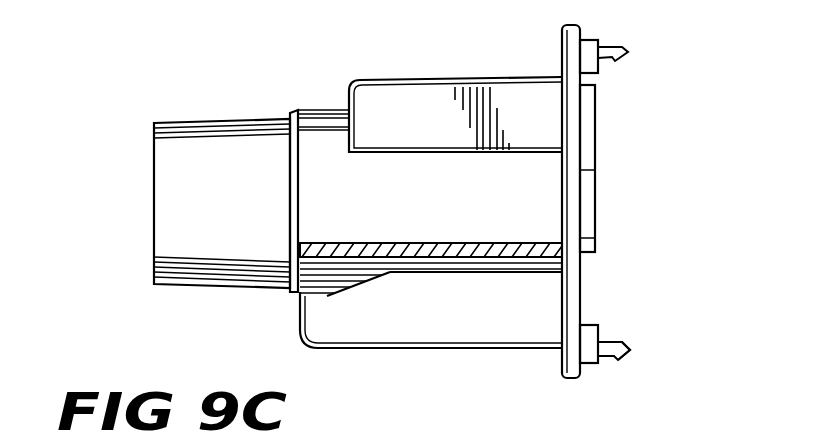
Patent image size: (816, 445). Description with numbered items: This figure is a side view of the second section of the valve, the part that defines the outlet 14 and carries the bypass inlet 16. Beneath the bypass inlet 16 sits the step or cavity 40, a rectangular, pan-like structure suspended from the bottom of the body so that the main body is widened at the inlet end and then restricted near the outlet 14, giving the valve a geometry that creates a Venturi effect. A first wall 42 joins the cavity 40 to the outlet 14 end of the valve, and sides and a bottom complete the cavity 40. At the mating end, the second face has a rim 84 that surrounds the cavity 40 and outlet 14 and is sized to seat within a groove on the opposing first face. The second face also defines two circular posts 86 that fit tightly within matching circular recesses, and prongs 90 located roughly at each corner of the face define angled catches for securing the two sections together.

The outlet 14 is at (152, 217).
The bypass inlet 16 is at (358, 281).
The cavity 40 is at (448, 107).
The first wall 42 is at (348, 85).
The rim 84 is at (593, 138).
The circular post 86 is at (593, 40).
The prong 90 is at (627, 348).